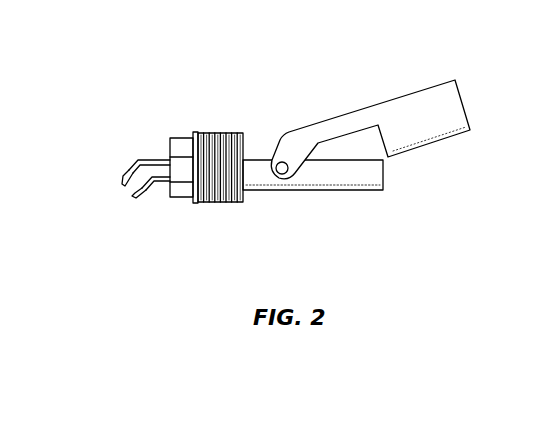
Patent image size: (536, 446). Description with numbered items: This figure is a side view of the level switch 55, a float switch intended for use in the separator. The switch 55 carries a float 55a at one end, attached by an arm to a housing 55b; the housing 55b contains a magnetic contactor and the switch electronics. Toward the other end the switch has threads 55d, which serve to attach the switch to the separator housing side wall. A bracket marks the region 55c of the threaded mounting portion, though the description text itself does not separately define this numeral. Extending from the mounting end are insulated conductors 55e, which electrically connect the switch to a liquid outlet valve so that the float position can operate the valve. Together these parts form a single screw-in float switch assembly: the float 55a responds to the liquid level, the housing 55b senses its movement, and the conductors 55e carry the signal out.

The level switch 55 is at (127, 84).
The float 55a is at (465, 103).
The housing 55b is at (385, 185).
The threaded mounting body 55c is at (390, 212).
The threads 55d is at (227, 131).
The insulated conductors 55e is at (137, 161).